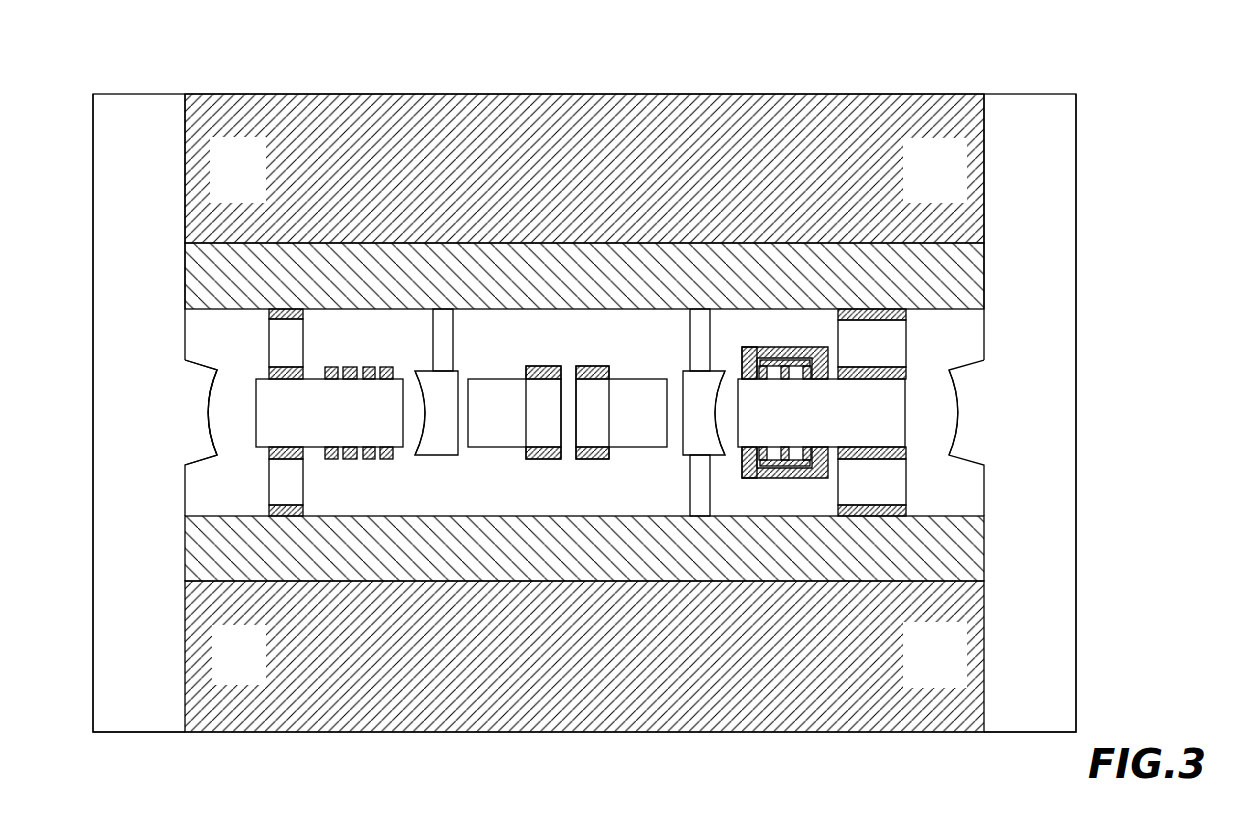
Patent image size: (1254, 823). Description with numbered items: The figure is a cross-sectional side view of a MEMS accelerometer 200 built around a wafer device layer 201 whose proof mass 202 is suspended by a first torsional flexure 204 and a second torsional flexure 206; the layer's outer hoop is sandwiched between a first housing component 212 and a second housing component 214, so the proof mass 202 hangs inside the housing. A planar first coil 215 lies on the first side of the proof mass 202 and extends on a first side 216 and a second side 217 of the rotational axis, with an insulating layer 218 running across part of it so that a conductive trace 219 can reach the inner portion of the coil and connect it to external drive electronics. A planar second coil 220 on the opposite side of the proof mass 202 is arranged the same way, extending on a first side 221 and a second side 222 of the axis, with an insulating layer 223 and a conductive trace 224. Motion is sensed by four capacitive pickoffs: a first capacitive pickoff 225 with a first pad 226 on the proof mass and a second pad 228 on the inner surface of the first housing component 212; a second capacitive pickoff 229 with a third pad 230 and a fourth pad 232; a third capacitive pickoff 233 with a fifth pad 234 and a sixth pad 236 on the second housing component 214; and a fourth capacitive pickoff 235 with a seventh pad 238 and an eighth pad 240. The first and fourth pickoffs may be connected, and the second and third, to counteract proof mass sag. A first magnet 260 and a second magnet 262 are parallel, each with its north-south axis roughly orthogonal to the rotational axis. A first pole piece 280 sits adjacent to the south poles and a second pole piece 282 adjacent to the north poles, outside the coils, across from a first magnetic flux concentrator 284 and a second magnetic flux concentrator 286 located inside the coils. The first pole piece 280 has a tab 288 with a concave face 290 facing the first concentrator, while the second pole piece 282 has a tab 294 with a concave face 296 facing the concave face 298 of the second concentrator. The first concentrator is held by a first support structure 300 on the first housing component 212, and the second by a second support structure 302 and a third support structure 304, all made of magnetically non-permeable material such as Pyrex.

The MEMS accelerometer 200 is at (1103, 86).
The wafer device layer 201 is at (232, 404).
The proof mass 202 is at (339, 427).
The first torsional flexure 204 is at (535, 410).
The second torsional flexure 206 is at (598, 408).
The first housing component 212 is at (596, 290).
The second housing component 214 is at (594, 565).
The first coil 215 is at (356, 356).
The first side 216 is at (380, 356).
The second side 217 is at (820, 368).
The insulating layer 218 is at (790, 350).
The conductive trace 219 is at (768, 325).
The second coil 220 is at (380, 468).
The first side 221 is at (356, 468).
The second side 222 is at (821, 460).
The insulating layer 223 is at (785, 479).
The conductive trace 224 is at (760, 479).
The first capacitive pickoff 225 is at (292, 340).
The first pad 226 is at (270, 373).
The second pad 228 is at (270, 314).
The second capacitive pickoff 229 is at (889, 337).
The third pad 230 is at (891, 367).
The fourth pad 232 is at (892, 319).
The third capacitive pickoff 233 is at (292, 487).
The fifth pad 234 is at (270, 455).
The fourth capacitive pickoff 235 is at (889, 484).
The sixth pad 236 is at (268, 508).
The seventh pad 238 is at (891, 459).
The eighth pad 240 is at (892, 505).
The first magnet 260 is at (583, 94).
The second magnet 262 is at (585, 733).
The first pole piece 280 is at (145, 733).
The second pole piece 282 is at (1021, 733).
The first magnetic flux concentrator 284 is at (458, 458).
The second magnetic flux concentrator 286 is at (683, 450).
The tab 288 is at (202, 463).
The concave face 290 is at (210, 428).
The tab 294 is at (967, 464).
The concave face 296 is at (418, 437).
The concave face 298 is at (717, 423).
The first support structure 300 is at (453, 345).
The second support structure 302 is at (690, 345).
The third support structure 304 is at (690, 488).